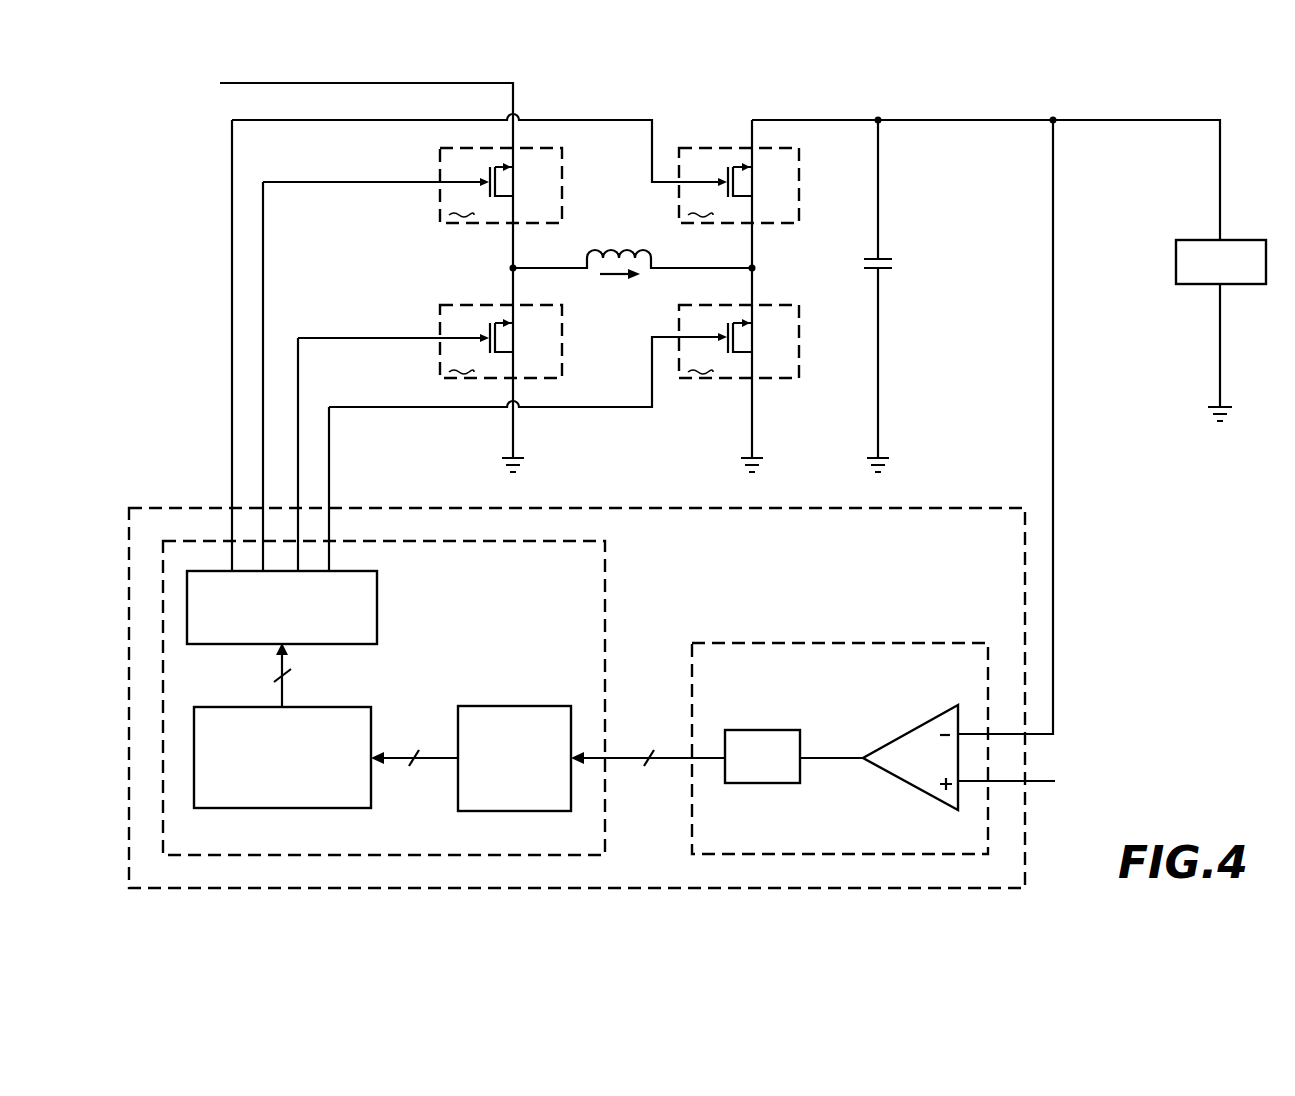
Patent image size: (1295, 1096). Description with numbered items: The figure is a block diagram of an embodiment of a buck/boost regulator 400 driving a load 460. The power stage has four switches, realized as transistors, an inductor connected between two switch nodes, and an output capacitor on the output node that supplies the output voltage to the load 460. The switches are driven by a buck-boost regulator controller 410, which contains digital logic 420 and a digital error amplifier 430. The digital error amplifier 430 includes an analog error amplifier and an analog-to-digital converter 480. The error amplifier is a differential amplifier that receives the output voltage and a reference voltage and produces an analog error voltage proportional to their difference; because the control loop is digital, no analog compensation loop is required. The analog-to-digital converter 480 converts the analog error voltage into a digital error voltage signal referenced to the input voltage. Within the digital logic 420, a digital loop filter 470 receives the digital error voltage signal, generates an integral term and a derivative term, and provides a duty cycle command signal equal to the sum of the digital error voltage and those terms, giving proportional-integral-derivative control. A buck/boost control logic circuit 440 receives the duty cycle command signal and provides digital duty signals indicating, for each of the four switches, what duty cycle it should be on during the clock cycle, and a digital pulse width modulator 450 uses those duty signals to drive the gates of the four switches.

The buck/boost regulator 400 is at (716, 86).
The buck-boost regulator controller 410 is at (965, 506).
The digital logic 420 is at (605, 576).
The digital error amplifier 430 is at (928, 643).
The buck/boost control logic circuit 440 is at (240, 808).
The digital pulse width modulator 450 is at (237, 644).
The load 460 is at (1243, 284).
The digital loop filter 470 is at (527, 811).
The analog-to-digital converter 480 is at (762, 730).